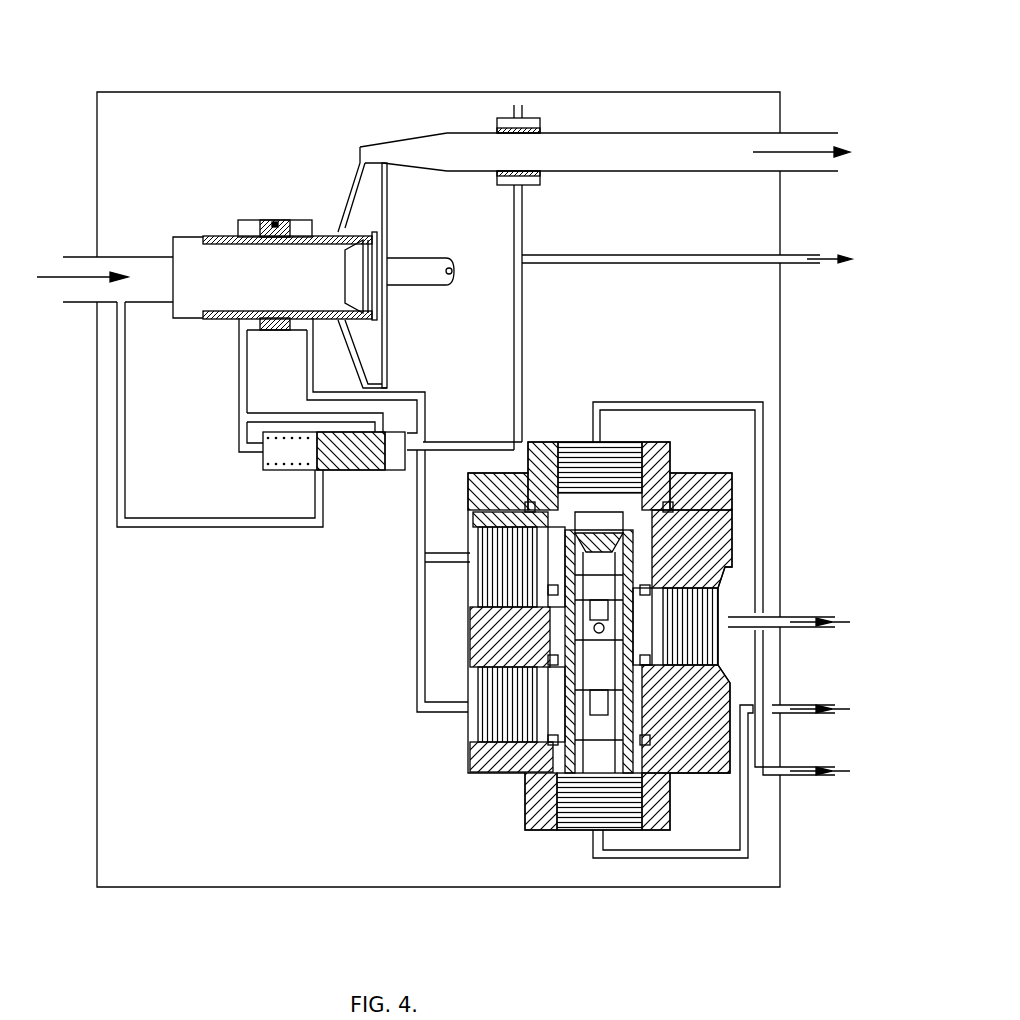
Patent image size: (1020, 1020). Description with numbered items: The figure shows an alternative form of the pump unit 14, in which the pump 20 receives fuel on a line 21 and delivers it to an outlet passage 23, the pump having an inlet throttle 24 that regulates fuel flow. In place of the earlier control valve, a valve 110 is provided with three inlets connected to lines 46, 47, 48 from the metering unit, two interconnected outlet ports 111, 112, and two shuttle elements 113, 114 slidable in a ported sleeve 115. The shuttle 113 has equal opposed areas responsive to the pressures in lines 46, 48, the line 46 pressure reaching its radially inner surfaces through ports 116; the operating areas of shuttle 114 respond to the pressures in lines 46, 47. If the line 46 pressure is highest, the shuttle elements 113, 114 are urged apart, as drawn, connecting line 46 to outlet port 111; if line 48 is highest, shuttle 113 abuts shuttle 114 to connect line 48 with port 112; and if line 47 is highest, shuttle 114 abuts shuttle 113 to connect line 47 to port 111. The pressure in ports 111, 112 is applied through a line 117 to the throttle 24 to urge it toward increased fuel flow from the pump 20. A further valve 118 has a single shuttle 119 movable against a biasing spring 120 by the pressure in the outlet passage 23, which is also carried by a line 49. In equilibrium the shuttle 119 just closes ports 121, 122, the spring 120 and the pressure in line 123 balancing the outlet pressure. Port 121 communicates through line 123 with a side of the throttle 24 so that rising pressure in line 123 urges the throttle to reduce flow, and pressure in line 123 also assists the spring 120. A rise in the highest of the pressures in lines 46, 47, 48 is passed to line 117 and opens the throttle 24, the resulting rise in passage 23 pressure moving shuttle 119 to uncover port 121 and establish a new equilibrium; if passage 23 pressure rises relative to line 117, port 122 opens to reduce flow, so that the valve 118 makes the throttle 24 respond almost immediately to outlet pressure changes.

The pump unit 14 is at (297, 108).
The pump 20 is at (313, 260).
The line 21 is at (82, 292).
The outlet passage 23 is at (783, 145).
The inlet throttle 24 is at (263, 225).
The line 46 is at (793, 618).
The line 47 is at (797, 706).
The line 48 is at (800, 778).
The line 49 is at (797, 257).
The valve 110 is at (593, 637).
The outlet port 111 is at (493, 725).
The outlet port 112 is at (493, 572).
The shuttle element 113 is at (613, 540).
The shuttle element 114 is at (588, 748).
The ported sleeve 115 is at (560, 677).
The ports 116 is at (590, 625).
The line 117 is at (417, 633).
The valve 118 is at (261, 440).
The shuttle 119 is at (343, 456).
The biasing spring 120 is at (280, 462).
The port 121 is at (380, 425).
The port 122 is at (320, 480).
The line 123 is at (247, 390).